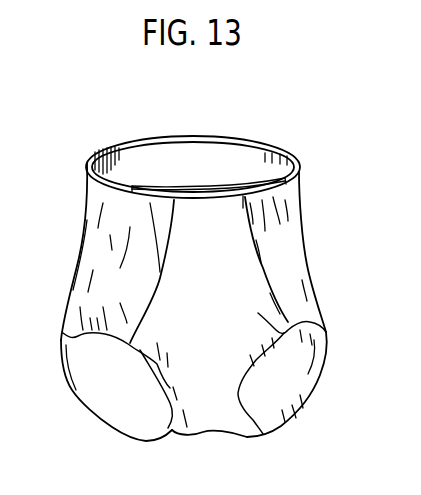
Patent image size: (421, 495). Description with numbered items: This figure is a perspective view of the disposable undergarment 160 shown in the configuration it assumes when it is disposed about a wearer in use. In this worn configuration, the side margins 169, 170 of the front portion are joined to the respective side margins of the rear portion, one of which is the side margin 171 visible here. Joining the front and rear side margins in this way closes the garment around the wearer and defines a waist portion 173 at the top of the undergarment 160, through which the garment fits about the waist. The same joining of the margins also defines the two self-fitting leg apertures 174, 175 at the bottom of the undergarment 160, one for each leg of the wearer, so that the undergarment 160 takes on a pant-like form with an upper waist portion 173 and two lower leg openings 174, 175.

The disposable undergarment 160 is at (299, 230).
The side margin of the front portion 169 is at (150, 185).
The side margin of the front portion 170 is at (262, 183).
The side margin of the rear portion 171 is at (195, 217).
The waist portion 173 is at (220, 134).
The self-fitting leg aperture 174 is at (90, 412).
The self-fitting leg aperture 175 is at (297, 412).